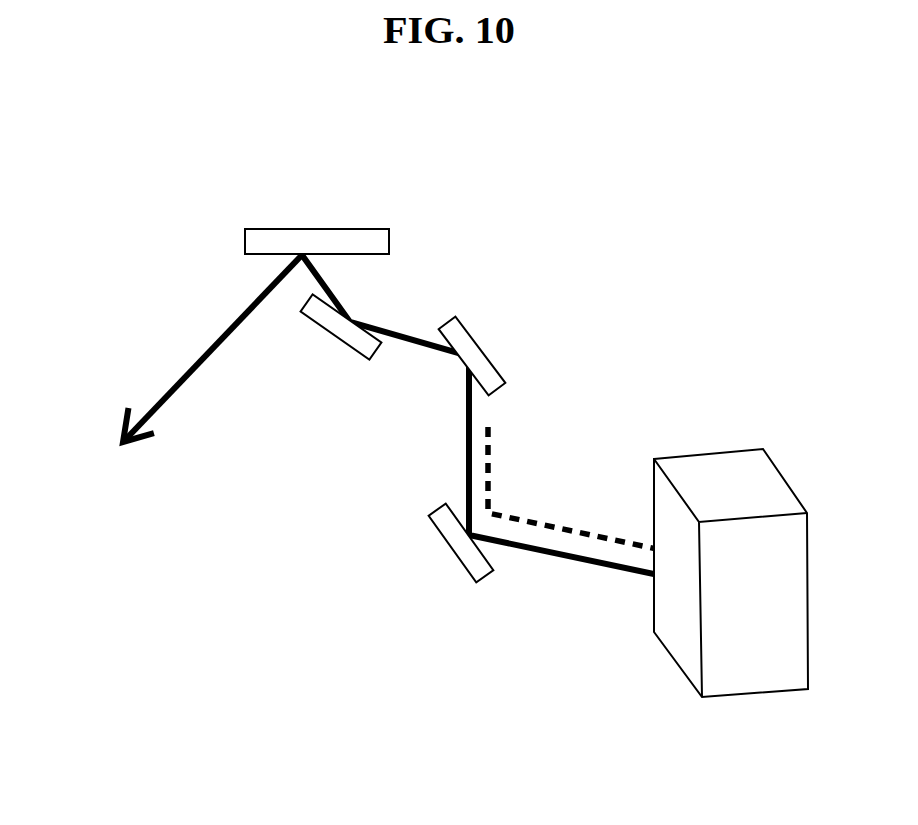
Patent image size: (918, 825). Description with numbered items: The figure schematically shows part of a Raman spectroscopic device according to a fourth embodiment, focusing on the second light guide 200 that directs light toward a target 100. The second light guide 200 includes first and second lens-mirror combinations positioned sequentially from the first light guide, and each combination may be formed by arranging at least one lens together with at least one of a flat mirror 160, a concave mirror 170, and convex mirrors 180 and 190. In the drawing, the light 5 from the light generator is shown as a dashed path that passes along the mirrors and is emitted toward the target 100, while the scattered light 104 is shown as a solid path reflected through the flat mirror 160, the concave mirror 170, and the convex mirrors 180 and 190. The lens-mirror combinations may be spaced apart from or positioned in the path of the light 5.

The second light guide 200 is at (453, 204).
The flat mirror 160 is at (275, 229).
The scattered light 104 is at (195, 357).
The concave mirror 170 is at (315, 325).
The convex mirror 180 is at (472, 337).
The convex mirror 190 is at (430, 515).
The light 5 is at (568, 525).
The target 100 is at (758, 693).